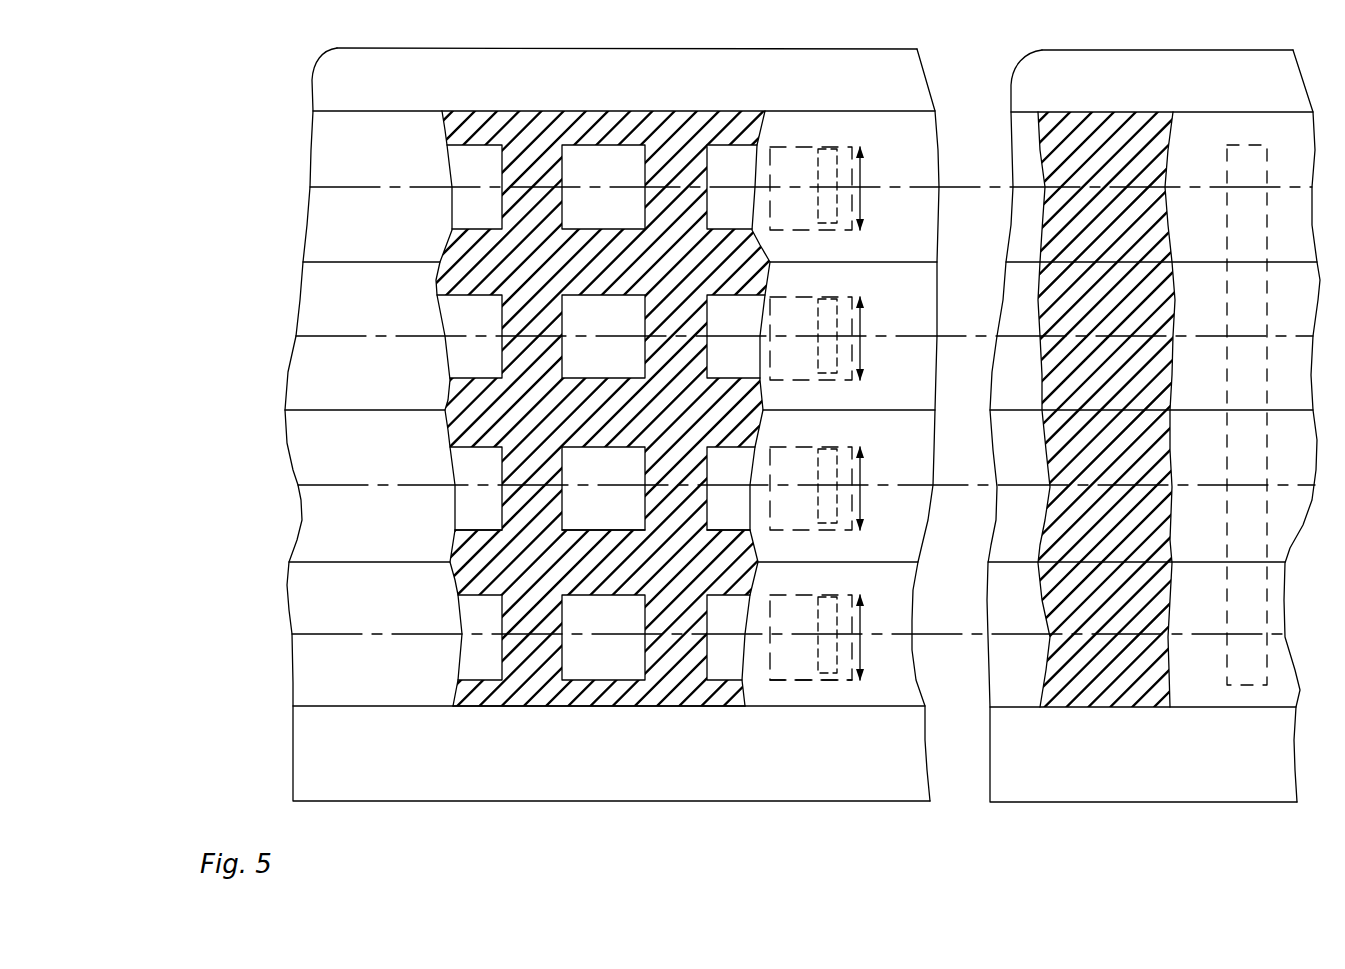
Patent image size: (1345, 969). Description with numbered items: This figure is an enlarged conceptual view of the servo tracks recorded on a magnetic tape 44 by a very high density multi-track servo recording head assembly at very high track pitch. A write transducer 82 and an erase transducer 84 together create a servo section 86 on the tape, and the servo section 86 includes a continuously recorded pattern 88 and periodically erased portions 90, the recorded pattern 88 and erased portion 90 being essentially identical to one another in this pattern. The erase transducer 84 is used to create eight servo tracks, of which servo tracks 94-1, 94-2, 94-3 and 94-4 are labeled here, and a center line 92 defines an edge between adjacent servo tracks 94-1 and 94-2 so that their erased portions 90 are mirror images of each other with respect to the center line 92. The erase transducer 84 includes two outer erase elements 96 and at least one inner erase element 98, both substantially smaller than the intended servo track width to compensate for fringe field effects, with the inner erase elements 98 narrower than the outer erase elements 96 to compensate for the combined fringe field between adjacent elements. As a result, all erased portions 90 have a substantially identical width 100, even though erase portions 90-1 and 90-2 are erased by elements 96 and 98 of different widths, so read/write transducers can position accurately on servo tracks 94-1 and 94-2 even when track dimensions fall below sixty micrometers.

The magnetic tape 44 is at (893, 48).
The write transducer 82 is at (1247, 688).
The erase transducer 84 is at (826, 681).
The servo section 86 is at (193, 705).
The continuously recorded pattern 88 is at (1093, 720).
The periodically erased portions 90 is at (605, 143).
The erase portion 90-1 is at (592, 708).
The erase portion 90-2 is at (577, 533).
The center line 92 is at (320, 636).
The servo track 94-1 is at (300, 683).
The servo track 94-2 is at (295, 585).
The servo track 94-3 is at (312, 500).
The servo track 94-4 is at (297, 443).
The outer erase elements 96 is at (818, 175).
The inner erase elements 98 is at (818, 325).
The width 100 is at (862, 170).